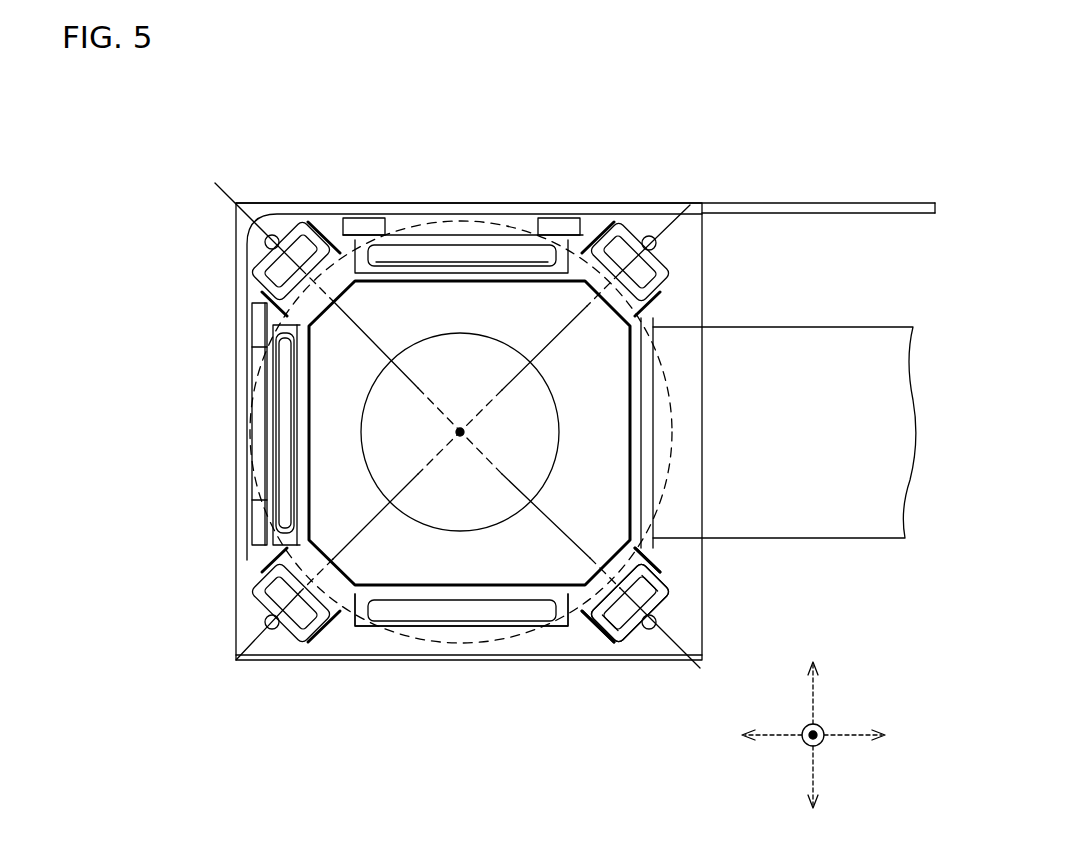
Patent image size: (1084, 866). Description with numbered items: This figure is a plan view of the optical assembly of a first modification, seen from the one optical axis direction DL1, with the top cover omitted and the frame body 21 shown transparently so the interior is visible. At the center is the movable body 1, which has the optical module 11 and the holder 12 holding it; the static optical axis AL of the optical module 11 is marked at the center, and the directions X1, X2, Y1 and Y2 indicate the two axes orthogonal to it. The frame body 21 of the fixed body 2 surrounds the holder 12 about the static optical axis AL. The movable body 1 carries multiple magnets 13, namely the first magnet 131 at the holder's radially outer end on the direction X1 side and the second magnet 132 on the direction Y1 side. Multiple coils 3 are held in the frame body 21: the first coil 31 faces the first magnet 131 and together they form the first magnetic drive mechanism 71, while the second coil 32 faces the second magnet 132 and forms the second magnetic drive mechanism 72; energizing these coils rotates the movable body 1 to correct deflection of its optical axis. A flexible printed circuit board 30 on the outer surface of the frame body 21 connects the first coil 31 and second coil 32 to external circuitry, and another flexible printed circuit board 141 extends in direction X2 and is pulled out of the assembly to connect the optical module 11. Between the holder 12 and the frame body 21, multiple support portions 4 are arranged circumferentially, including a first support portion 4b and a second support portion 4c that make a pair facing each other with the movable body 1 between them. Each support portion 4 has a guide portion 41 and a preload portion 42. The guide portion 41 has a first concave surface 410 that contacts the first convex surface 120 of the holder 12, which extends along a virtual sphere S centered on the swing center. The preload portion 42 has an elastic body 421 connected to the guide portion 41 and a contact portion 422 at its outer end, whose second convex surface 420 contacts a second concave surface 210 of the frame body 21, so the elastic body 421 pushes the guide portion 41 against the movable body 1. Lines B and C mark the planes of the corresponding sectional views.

The movable body 1 is at (460, 630).
The fixed body 2 is at (404, 662).
The coils 3 is at (482, 222).
The support portions 4 is at (550, 765).
The first support portion 4b is at (303, 222).
The second support portion 4c is at (614, 222).
The optical module 11 is at (335, 375).
The holder 12 is at (297, 311).
The magnets 13 is at (270, 392).
The frame body 21 is at (352, 657).
The flexible printed circuit board 30 is at (893, 204).
The first coil 31 is at (262, 455).
The second coil 32 is at (463, 245).
The guide portion 41 is at (593, 615).
The preload portion 42 is at (686, 712).
The first magnetic drive mechanism 71 is at (160, 440).
The second magnetic drive mechanism 72 is at (472, 140).
The first convex surface 120 is at (620, 578).
The first magnet 131 is at (280, 422).
The second magnet 132 is at (427, 256).
The flexible printed circuit board 141 is at (810, 327).
The second concave surface 210 is at (646, 626).
The first concave surface 410 is at (533, 600).
The second convex surface 420 is at (645, 640).
The elastic body 421 is at (618, 627).
The contact portion 422 is at (638, 628).
The static optical axis AL is at (463, 447).
The virtual sphere S is at (672, 432).
The line B- B is at (461, 434).
The line C- C is at (463, 434).
The one optical axis direction DL1 is at (825, 730).
The direction X1 is at (754, 743).
The direction X2 is at (871, 743).
The direction Y1 is at (813, 678).
The direction Y2 is at (813, 797).